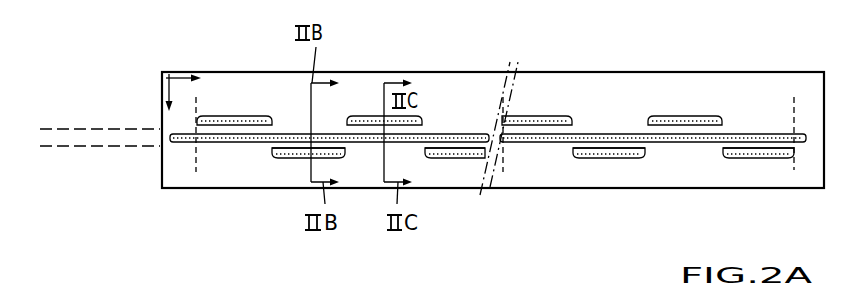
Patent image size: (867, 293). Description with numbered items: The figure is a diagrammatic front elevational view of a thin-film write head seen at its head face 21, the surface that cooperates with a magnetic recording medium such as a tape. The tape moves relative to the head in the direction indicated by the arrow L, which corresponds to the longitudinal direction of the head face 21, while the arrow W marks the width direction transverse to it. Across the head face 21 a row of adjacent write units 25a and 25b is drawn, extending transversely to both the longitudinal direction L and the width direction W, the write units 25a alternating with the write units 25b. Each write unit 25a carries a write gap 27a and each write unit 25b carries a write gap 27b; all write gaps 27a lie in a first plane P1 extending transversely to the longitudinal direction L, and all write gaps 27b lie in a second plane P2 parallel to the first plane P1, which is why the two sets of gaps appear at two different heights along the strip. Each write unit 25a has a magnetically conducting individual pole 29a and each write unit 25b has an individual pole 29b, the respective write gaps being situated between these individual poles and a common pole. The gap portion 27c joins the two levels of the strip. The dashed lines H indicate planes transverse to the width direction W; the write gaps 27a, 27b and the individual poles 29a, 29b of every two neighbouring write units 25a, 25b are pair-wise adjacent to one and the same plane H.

The head face 21 is at (167, 168).
The write unit 25a is at (250, 88).
The write unit 25b is at (297, 173).
The write gap 27a is at (213, 133).
The write gap 27b is at (288, 147).
The connecting lead portion 27c is at (369, 135).
The individual pole 29a is at (366, 117).
The individual pole 29b is at (468, 156).
The plane H is at (272, 172).
The width direction W is at (183, 62).
The longitudinal direction L is at (167, 97).
The first plane P1 is at (79, 128).
The second plane P2 is at (87, 147).